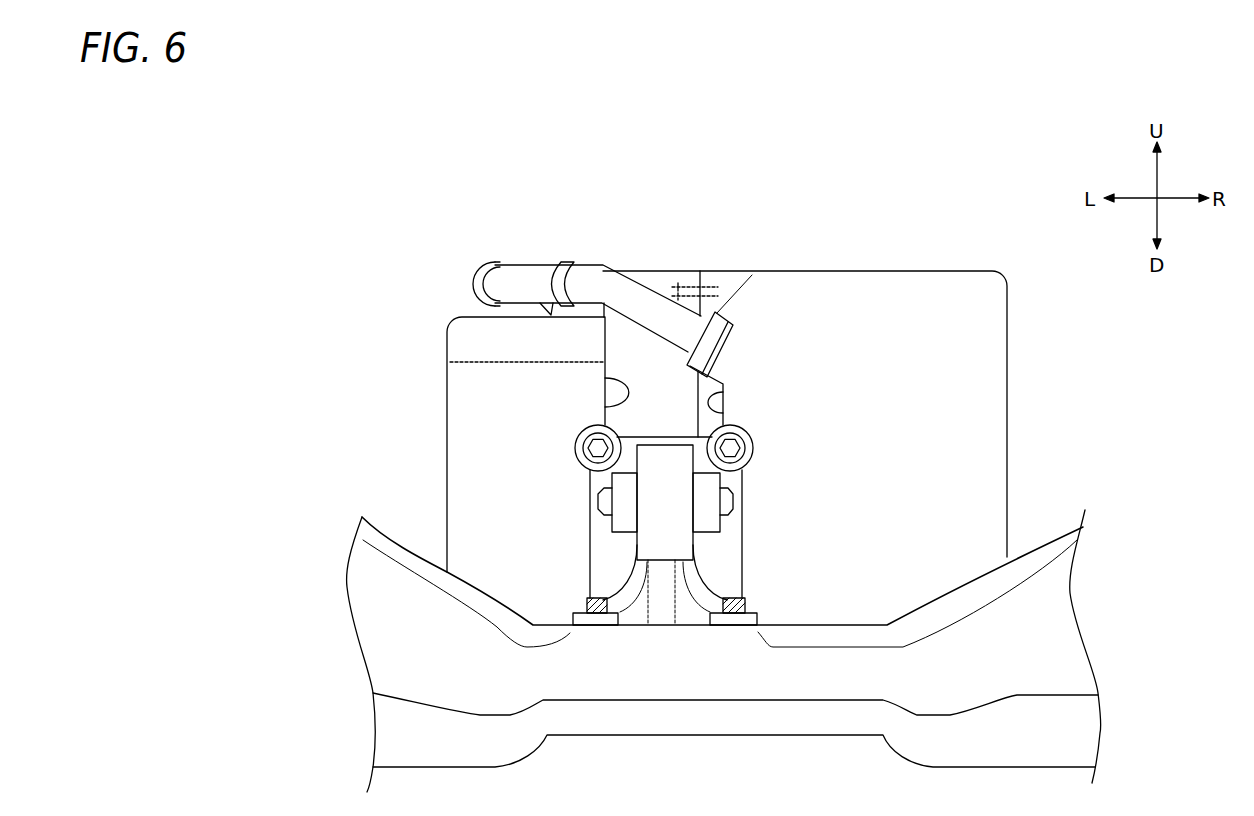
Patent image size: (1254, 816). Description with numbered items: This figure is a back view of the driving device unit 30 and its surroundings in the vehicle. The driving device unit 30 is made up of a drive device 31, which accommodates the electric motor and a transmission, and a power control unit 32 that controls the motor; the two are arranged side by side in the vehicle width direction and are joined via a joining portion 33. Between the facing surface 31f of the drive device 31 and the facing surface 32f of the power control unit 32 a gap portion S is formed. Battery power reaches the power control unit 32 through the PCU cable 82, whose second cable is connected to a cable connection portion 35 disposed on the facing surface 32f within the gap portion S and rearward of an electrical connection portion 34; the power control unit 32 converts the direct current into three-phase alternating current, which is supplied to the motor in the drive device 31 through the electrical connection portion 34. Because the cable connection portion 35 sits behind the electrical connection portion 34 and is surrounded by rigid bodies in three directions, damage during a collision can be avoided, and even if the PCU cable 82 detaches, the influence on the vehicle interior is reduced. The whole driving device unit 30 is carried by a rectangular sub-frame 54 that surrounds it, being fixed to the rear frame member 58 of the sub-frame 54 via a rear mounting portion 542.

The driving device unit 30 is at (1007, 255).
The drive device 31 is at (447, 407).
The facing surface of the drive device 31f is at (603, 415).
The power control unit (PCU) 32 is at (1017, 317).
The facing surface of the PCU 32f is at (723, 413).
The joining portion 33 is at (700, 271).
The electrical connection portion 34 is at (678, 282).
The cable connection portion 35 is at (723, 311).
The PCU cable 82 is at (482, 265).
The sub-frame 54 is at (1075, 592).
The rear frame member 58 is at (1058, 631).
The rear mounting portion 542 is at (655, 507).
The gap portion S is at (667, 417).